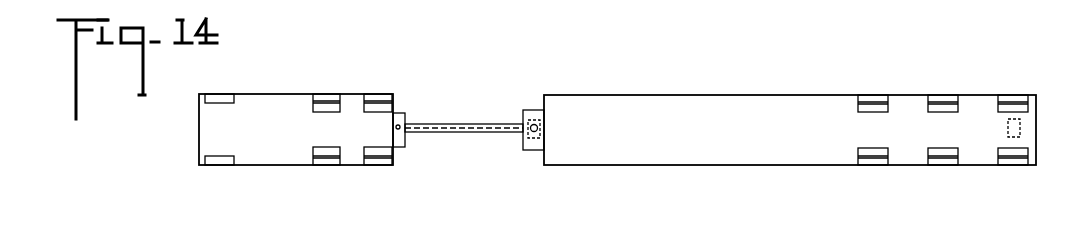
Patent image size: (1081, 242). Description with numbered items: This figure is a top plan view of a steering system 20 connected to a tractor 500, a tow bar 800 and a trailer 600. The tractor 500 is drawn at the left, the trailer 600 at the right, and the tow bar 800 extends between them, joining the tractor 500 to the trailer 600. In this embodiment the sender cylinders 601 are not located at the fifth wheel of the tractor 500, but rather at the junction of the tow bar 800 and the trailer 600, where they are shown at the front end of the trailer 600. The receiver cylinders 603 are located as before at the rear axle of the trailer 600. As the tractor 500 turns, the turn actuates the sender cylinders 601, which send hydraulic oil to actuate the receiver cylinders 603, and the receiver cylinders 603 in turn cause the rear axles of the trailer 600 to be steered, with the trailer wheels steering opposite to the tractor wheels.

The steering system 20 is at (992, 63).
The tractor 500 is at (316, 63).
The trailer 600 is at (703, 63).
The sender cylinders 601 is at (534, 110).
The receiver cylinders 603 is at (1023, 125).
The tow bar 800 is at (458, 128).